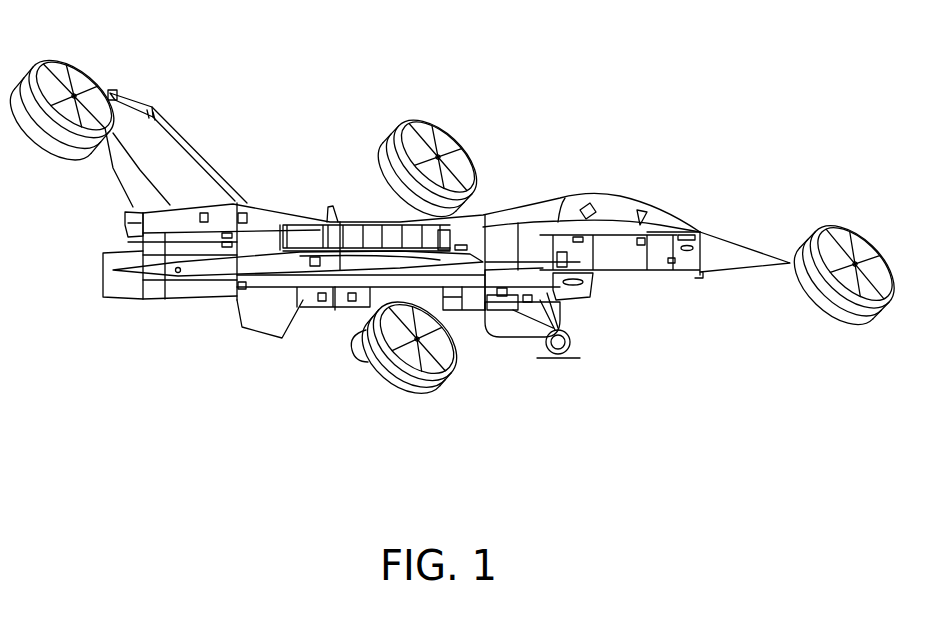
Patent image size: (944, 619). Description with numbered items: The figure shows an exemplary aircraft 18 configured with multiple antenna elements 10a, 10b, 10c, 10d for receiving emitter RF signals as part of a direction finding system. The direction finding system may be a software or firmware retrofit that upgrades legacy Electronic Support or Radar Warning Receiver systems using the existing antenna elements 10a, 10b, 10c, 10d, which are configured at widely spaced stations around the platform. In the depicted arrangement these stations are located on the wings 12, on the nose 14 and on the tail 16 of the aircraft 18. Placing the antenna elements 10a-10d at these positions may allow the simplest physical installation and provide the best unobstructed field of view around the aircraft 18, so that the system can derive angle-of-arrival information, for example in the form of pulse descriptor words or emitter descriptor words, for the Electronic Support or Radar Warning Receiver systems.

The antenna element 10a is at (430, 128).
The antenna element 10b is at (433, 393).
The antenna element 10c is at (853, 242).
The antenna element 10d is at (57, 66).
The wings 12 is at (332, 307).
The nose 14 is at (757, 255).
The tail 16 is at (153, 108).
The aircraft 18 is at (614, 130).